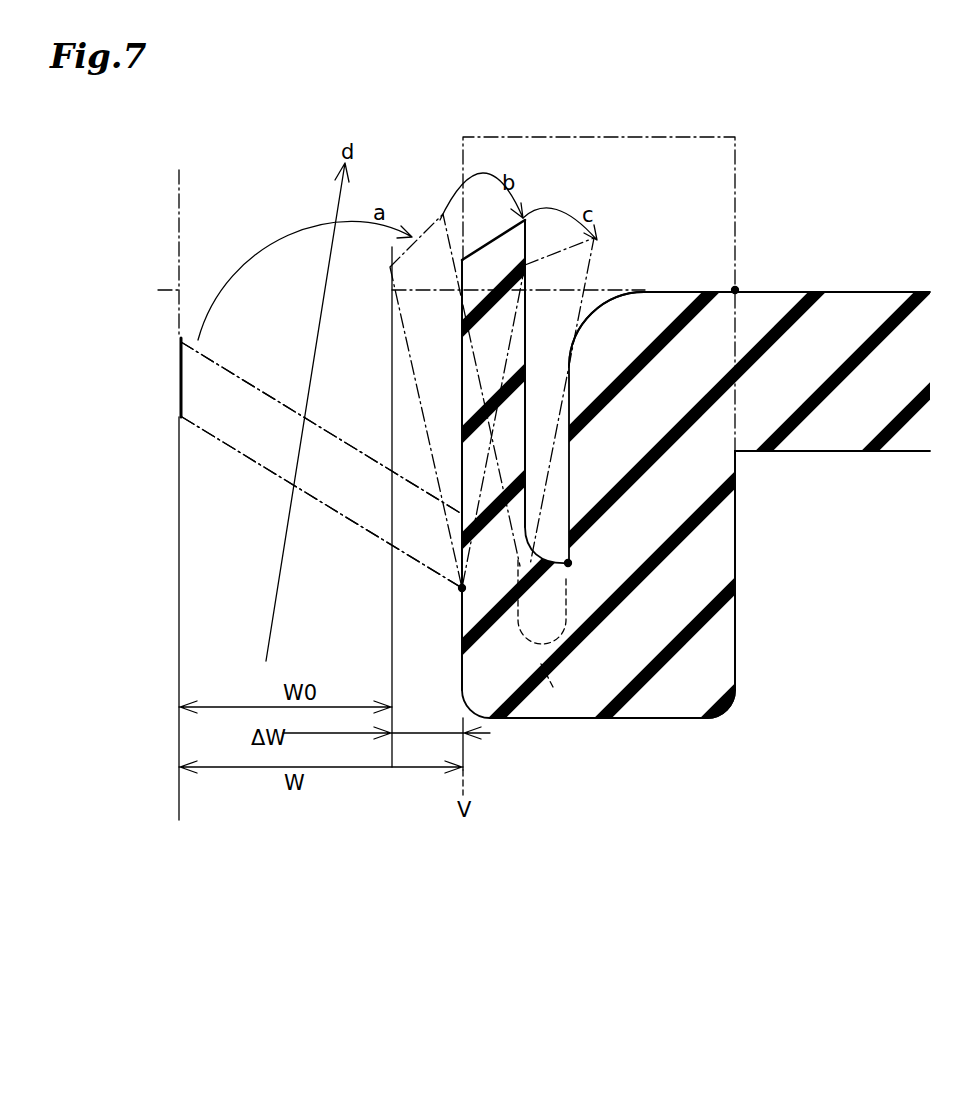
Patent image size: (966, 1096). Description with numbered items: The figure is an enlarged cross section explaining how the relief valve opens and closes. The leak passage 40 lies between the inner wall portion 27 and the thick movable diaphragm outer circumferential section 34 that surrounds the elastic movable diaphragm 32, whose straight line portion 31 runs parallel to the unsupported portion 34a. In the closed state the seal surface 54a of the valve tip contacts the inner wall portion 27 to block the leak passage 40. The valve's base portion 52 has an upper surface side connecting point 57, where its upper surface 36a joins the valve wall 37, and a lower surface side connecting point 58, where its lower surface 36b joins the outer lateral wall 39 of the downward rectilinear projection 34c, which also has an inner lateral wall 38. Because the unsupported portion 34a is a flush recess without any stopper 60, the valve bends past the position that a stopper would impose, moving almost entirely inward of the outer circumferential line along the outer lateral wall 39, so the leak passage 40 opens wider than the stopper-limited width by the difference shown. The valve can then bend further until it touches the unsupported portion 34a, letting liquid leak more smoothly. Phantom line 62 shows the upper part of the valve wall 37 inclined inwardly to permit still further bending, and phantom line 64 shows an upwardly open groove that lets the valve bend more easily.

The inner wall portion 27 is at (160, 290).
The straight line portion 31 is at (738, 289).
The elastic movable diaphragm 32 is at (862, 307).
The movable diaphragm outer circumferential section 34 is at (733, 637).
The unsupported portion 34a is at (641, 294).
The downward rectilinear projection 34c is at (653, 697).
The upper surface of relief valve 36a is at (341, 438).
The lower surface of relief valve 36b is at (316, 505).
The valve wall 37 is at (737, 482).
The inner lateral wall 38 is at (737, 657).
The outer lateral wall 39 is at (462, 635).
The leak passage 40 is at (251, 569).
The base portion 52 is at (500, 562).
The seal surface 54a is at (185, 384).
The upper surface side connecting point 57 is at (570, 565).
The lower surface side connecting point 58 is at (462, 589).
The stopper 60 is at (738, 210).
The phantom line of inclined valve wall 62 is at (637, 397).
The phantom line of upwardly open groove 64 is at (553, 687).